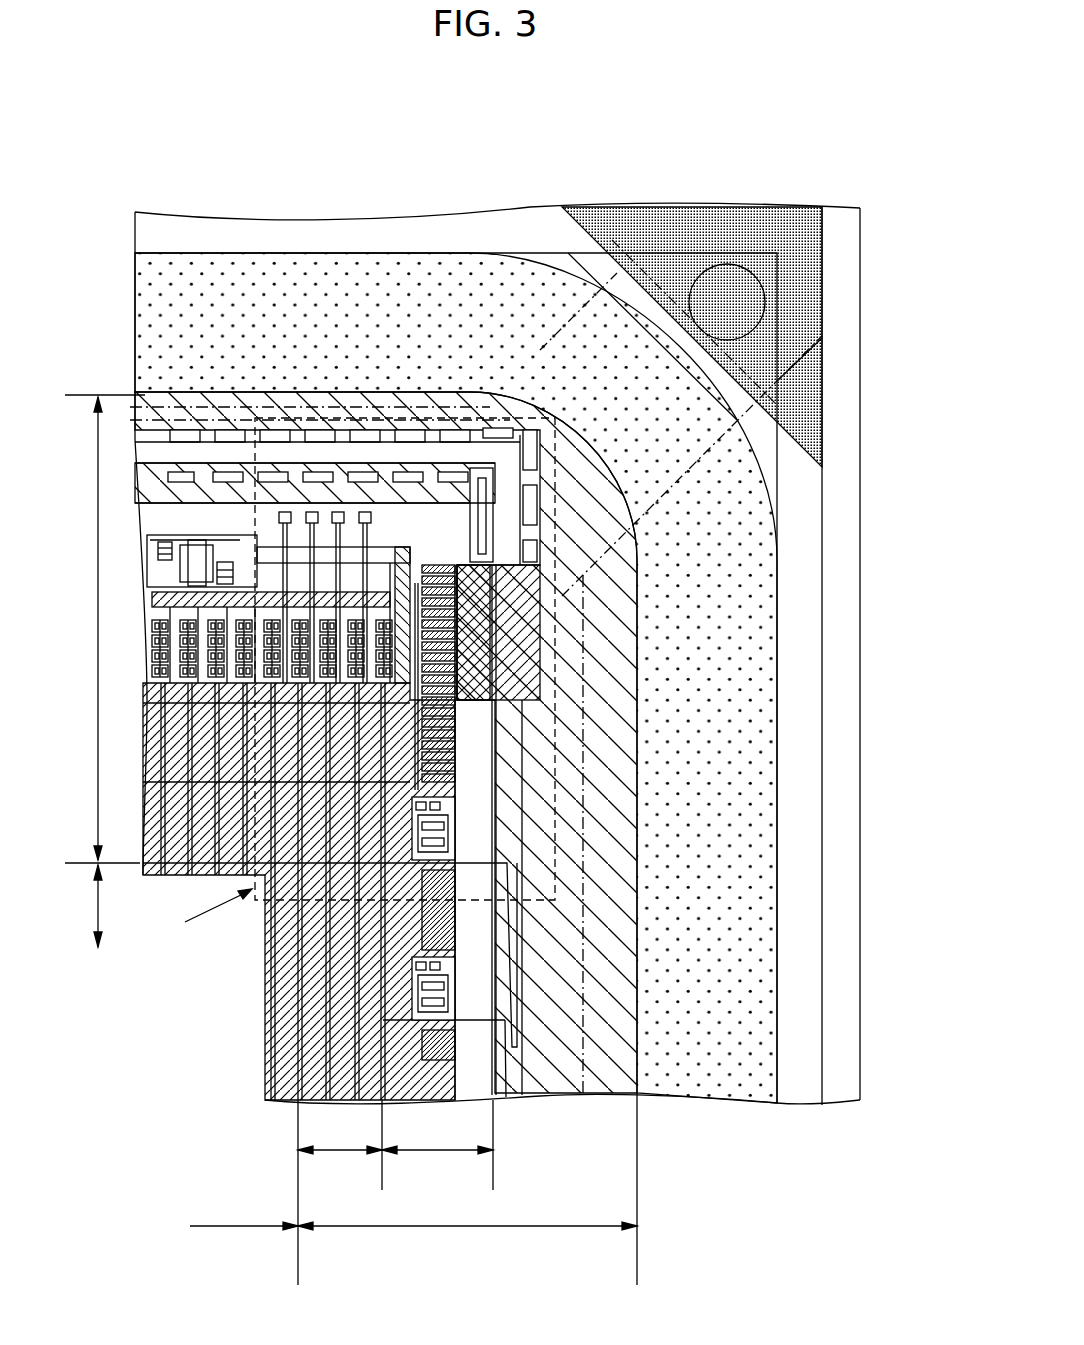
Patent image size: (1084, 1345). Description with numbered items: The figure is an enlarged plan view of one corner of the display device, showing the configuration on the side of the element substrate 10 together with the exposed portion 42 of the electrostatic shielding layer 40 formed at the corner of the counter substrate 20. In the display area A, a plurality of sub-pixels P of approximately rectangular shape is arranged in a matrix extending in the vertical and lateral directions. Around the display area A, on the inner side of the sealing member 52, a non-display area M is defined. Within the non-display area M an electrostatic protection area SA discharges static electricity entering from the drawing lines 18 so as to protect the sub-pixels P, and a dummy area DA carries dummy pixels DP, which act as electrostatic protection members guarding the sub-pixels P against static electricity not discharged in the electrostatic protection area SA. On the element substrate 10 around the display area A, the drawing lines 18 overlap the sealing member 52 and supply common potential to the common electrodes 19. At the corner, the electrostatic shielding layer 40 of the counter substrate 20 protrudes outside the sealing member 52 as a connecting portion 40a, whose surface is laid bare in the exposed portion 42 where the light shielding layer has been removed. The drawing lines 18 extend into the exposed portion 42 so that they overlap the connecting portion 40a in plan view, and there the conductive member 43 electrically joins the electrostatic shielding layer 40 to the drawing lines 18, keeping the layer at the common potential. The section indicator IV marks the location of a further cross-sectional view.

The element substrate 10 is at (840, 230).
The drawing lines 18 is at (767, 482).
The common electrodes 19 is at (285, 1075).
The counter substrate 20 is at (795, 650).
The electrostatic shielding layer 40 is at (200, 404).
The connecting portion 40a is at (655, 240).
The exposed portion 42 is at (602, 222).
The conductive member 43 is at (735, 288).
The sealing member 52 is at (765, 800).
The sub-pixels P is at (280, 978).
The dummy pixels DP is at (285, 1005).
The section line IV is at (203, 916).
The non-display area M is at (351, 840).
The display area A is at (183, 1064).
The dummy area DA is at (340, 1145).
The electrostatic protection area SA is at (437, 1145).